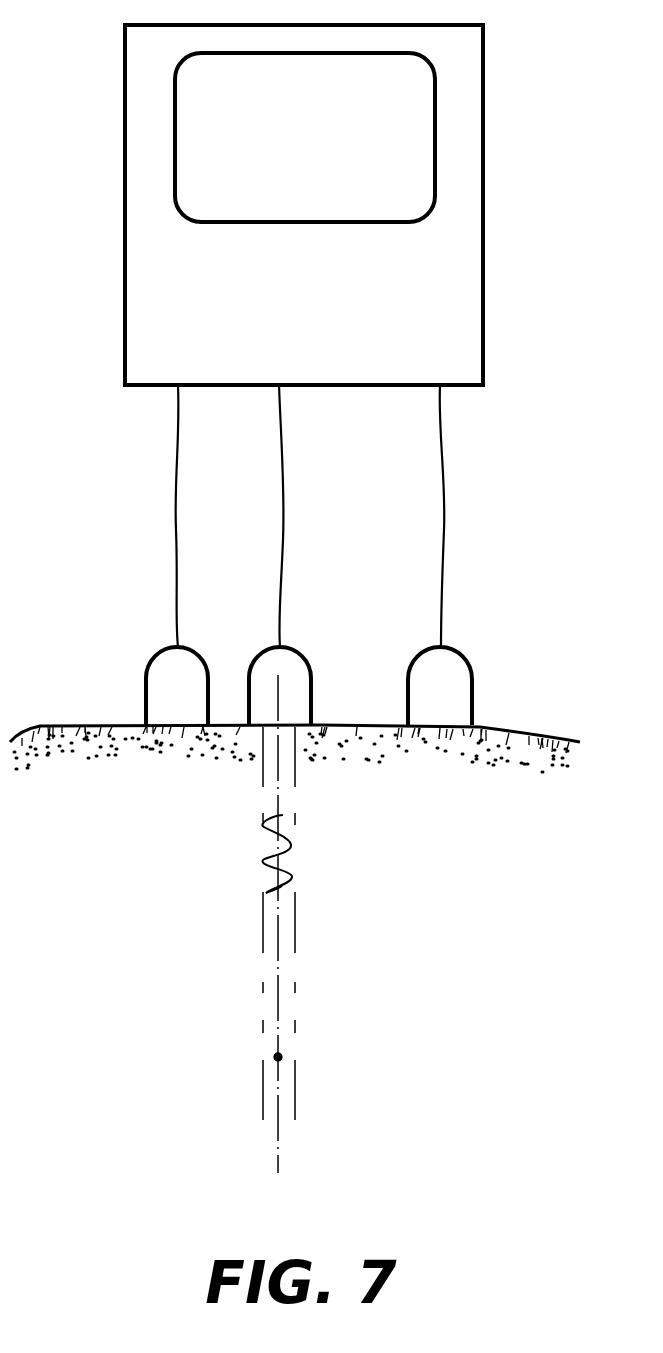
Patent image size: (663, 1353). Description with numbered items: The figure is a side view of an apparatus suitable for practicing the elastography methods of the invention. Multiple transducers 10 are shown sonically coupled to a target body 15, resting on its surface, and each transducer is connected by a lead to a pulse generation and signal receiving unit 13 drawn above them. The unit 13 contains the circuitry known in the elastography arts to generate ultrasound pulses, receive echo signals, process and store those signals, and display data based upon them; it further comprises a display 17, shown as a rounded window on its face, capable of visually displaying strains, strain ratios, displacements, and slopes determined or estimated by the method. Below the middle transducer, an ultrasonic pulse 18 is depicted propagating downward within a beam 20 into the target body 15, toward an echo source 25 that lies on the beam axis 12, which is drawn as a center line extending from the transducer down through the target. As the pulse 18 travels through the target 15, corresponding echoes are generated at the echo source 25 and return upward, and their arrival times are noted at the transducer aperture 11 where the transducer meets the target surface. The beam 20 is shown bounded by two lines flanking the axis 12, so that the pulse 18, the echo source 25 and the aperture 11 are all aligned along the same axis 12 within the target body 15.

The transducer 10 is at (510, 663).
The transducer aperture 11 is at (278, 730).
The beam axis 12 is at (277, 697).
The pulse generation and signal receiving unit 13 is at (280, 312).
The target body 15 is at (480, 818).
The display 17 is at (314, 138).
The ultrasonic pulse 18 is at (293, 877).
The beam 20 is at (297, 937).
The echo source 25 is at (273, 1057).